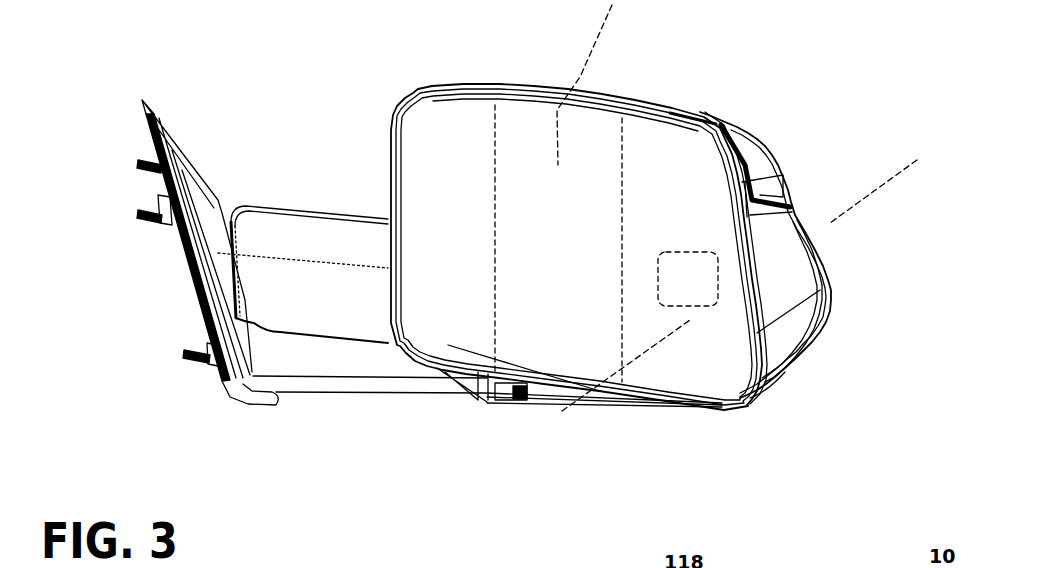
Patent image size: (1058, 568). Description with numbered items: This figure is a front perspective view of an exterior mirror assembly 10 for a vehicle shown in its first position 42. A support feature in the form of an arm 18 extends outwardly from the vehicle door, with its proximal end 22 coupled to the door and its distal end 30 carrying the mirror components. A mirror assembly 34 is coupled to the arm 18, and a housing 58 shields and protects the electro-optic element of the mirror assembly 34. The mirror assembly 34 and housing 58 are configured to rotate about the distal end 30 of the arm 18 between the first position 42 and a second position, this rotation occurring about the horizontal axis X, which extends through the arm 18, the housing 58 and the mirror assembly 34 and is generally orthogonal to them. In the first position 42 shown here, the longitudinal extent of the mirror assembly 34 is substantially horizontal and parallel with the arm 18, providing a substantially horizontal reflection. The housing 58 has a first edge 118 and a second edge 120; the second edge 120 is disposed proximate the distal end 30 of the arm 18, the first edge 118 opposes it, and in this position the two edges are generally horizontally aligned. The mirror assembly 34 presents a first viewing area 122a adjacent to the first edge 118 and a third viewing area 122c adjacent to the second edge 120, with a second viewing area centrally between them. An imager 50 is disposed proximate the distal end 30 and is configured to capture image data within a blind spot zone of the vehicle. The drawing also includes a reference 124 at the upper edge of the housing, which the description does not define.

The exterior mirror assembly 10 is at (772, 117).
The arm 18 is at (343, 212).
The proximal end 22 is at (245, 218).
The distal end 30 is at (797, 363).
The mirror assembly 34 is at (441, 343).
The first position 42 is at (386, 356).
The imager 50 is at (710, 305).
The housing 58 is at (647, 112).
The first edge 118 is at (390, 123).
The second edge 120 is at (742, 182).
The first viewing area 122a is at (462, 125).
The third viewing area 122c is at (677, 160).
The outer frame edge 124 is at (431, 86).
The horizontal axis X is at (562, 411).